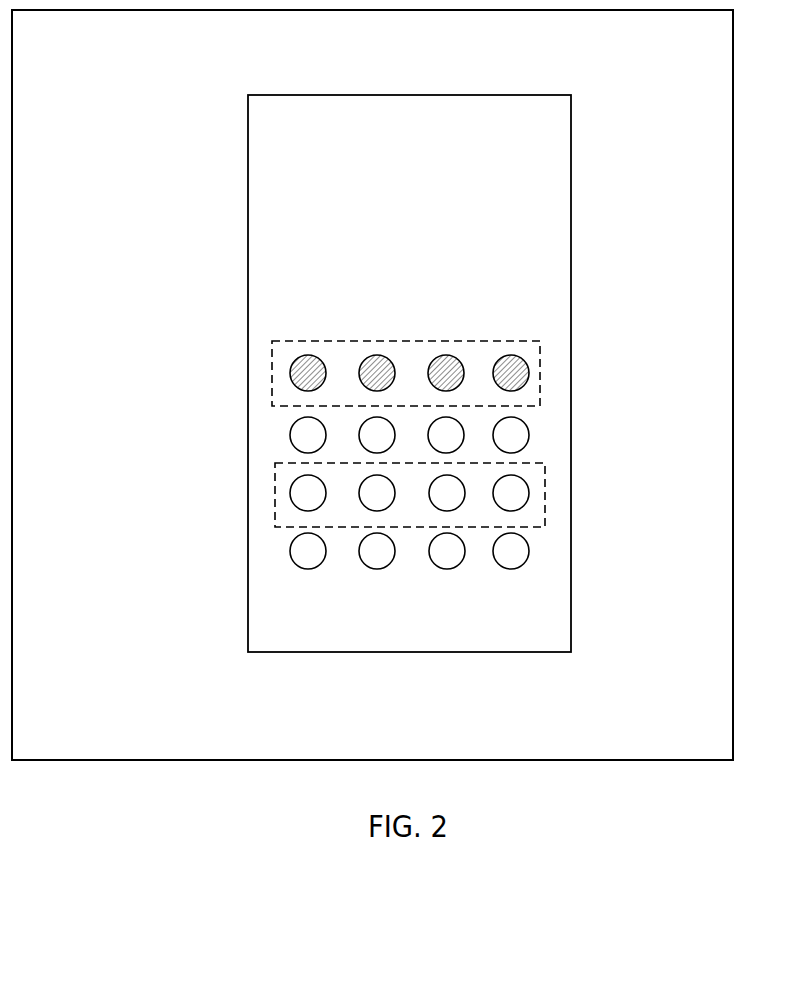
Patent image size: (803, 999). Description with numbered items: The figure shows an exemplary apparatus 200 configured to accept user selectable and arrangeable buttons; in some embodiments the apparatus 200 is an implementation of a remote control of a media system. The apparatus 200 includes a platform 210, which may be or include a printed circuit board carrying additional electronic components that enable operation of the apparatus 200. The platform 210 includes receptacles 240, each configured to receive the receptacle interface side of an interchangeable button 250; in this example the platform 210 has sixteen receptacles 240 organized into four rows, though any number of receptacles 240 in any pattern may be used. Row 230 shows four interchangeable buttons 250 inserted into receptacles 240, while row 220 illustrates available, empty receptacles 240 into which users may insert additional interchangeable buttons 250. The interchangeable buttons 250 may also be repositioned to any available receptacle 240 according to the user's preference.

The apparatus 200 is at (372, 385).
The platform 210 is at (409, 373).
The row 220 is at (542, 368).
The row 230 is at (545, 492).
The receptacle 240 is at (378, 355).
The interchangeable button 250 is at (290, 492).